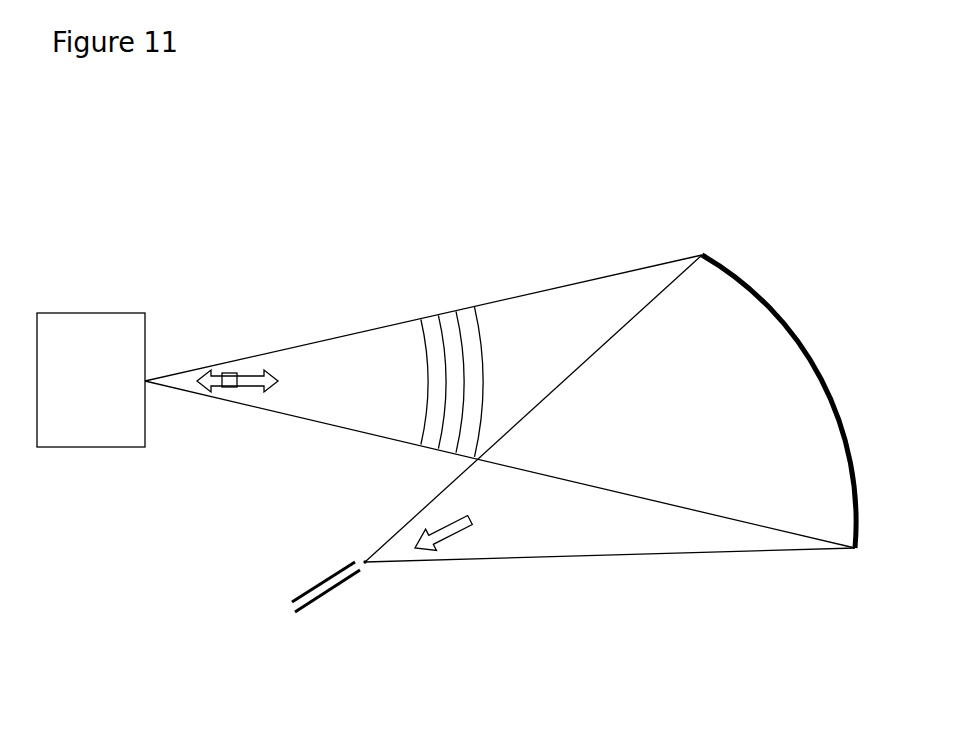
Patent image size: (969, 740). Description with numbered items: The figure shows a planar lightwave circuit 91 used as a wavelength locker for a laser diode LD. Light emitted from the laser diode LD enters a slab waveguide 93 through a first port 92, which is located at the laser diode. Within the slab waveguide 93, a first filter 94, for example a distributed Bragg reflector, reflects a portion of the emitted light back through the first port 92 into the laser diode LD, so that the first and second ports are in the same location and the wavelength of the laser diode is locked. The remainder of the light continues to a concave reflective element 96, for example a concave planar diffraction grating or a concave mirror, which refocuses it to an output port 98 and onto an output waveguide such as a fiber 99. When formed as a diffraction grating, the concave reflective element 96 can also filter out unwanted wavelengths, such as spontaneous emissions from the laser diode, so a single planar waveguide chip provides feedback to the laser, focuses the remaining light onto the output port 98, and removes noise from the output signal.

The planar lightwave circuit 91 is at (567, 200).
The first port 92 is at (147, 383).
The slab waveguide 93 is at (670, 416).
The first filter 94 is at (447, 333).
The concave reflective element 96 is at (820, 377).
The output port 98 is at (368, 565).
The fiber 99 is at (307, 593).